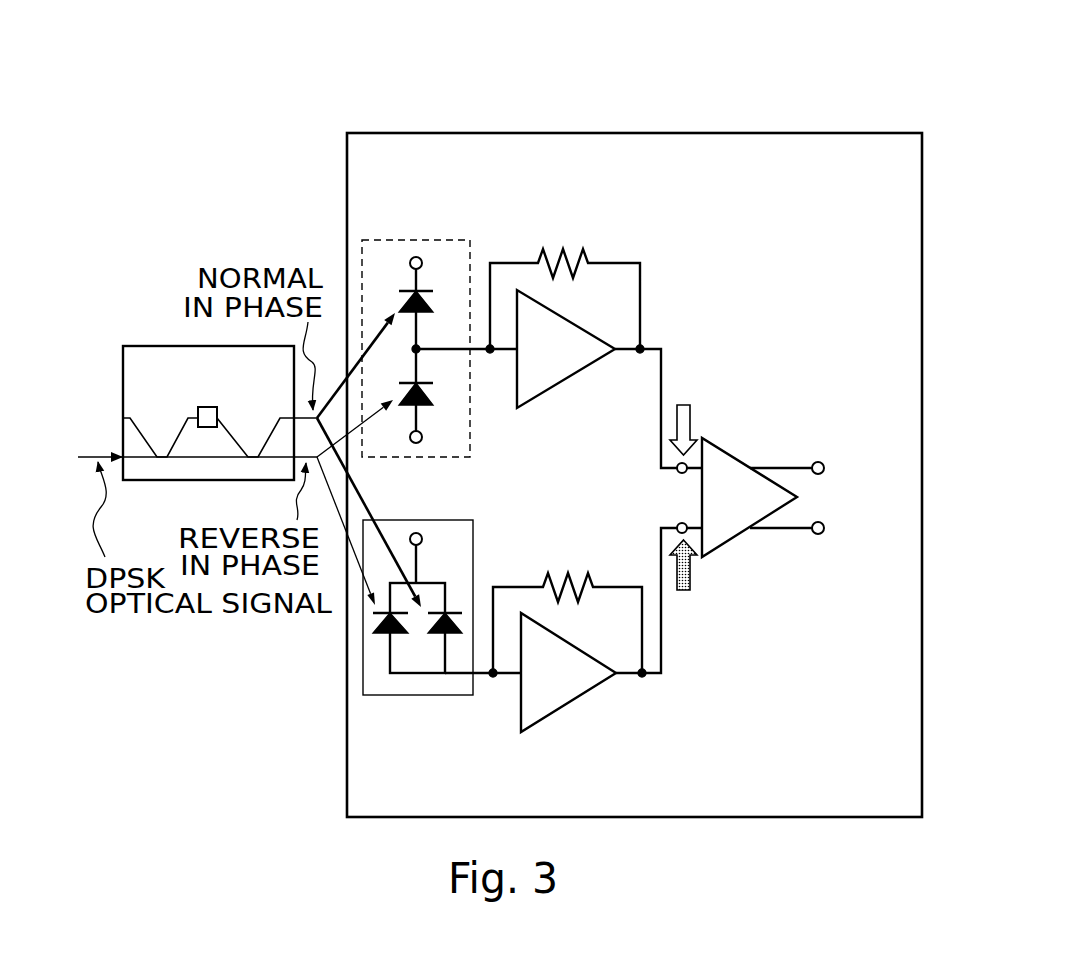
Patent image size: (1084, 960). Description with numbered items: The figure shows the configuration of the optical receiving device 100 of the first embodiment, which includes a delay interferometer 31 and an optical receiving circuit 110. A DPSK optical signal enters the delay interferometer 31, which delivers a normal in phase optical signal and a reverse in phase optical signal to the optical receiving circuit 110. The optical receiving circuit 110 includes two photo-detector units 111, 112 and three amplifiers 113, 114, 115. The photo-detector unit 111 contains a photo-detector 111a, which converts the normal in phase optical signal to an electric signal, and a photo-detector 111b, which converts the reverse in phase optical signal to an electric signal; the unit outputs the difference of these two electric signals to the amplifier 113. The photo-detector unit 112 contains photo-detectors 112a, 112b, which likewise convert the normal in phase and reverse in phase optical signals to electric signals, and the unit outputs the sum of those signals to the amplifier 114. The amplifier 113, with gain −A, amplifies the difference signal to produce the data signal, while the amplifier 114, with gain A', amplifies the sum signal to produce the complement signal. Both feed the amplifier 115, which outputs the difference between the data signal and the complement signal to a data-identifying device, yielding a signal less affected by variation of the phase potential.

The optical receiving device 100 is at (346, 86).
The delay interferometer 31 is at (150, 346).
The optical receiving circuit 110 is at (688, 133).
The photo-detector unit 111 is at (402, 235).
The photo-detector 111a is at (435, 283).
The photo-detector 111b is at (433, 408).
The photo-detector unit 112 is at (405, 518).
The photo-detector 112a is at (452, 602).
The photo-detector 112b is at (382, 642).
The amplifier 113 is at (565, 385).
The amplifier 114 is at (573, 703).
The amplifier 115 is at (742, 460).